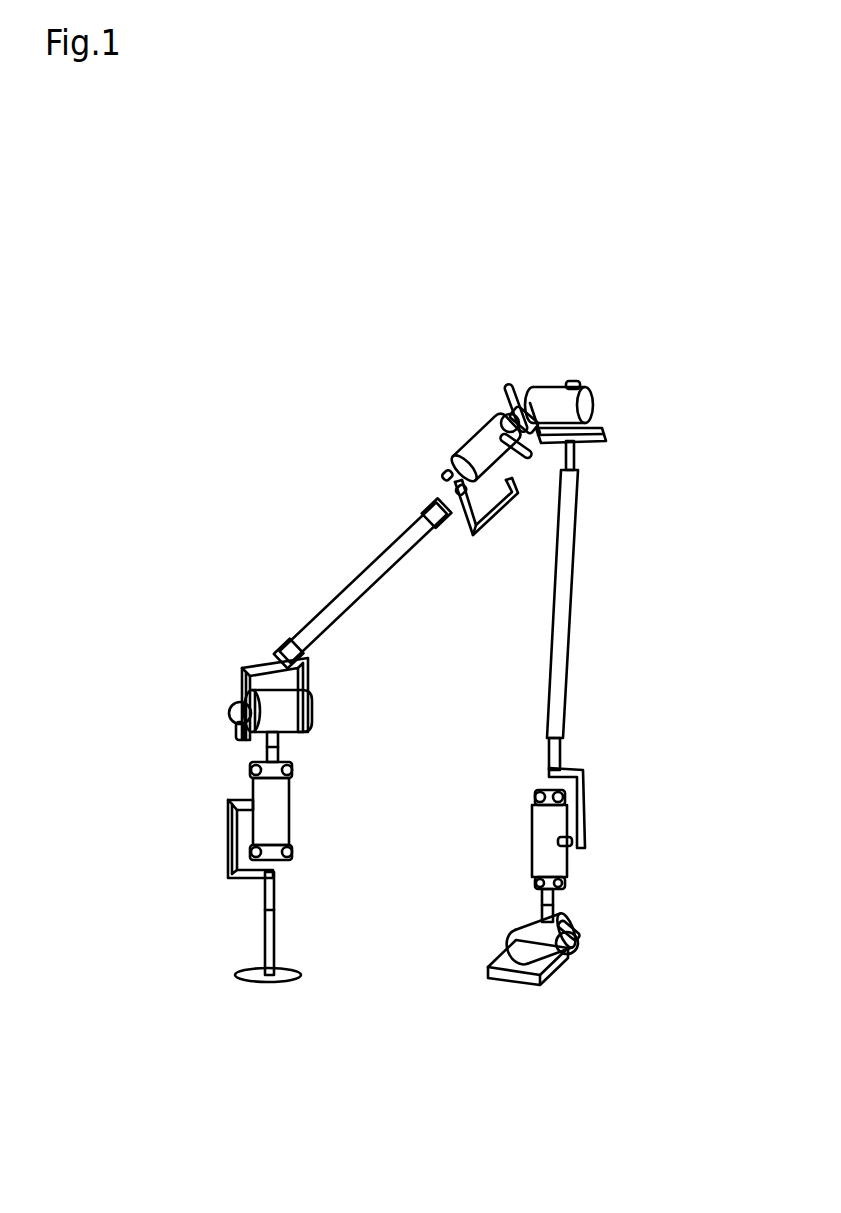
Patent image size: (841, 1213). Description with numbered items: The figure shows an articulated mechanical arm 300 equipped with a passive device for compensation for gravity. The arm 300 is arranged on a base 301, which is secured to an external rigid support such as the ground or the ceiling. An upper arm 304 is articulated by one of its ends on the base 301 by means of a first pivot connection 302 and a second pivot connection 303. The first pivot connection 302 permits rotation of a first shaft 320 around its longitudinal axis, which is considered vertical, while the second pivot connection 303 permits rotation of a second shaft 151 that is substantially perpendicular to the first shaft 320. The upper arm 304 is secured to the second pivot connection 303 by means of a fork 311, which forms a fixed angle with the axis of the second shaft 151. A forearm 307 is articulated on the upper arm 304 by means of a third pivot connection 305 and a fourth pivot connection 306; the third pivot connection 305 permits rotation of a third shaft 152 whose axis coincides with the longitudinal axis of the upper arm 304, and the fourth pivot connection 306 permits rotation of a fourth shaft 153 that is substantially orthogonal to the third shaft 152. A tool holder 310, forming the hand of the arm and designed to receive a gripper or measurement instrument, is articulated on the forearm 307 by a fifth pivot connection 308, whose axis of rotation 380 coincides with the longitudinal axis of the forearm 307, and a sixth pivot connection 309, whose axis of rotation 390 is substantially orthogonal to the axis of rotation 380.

The articulated mechanical arm 300 is at (168, 278).
The base 301 is at (255, 930).
The first pivot connection 302 is at (270, 808).
The second pivot connection 303 is at (288, 710).
The upper arm 304 is at (362, 582).
The third pivot connection 305 is at (488, 462).
The fourth pivot connection 306 is at (575, 388).
The forearm 307 is at (572, 663).
The fifth pivot connection 308 is at (555, 860).
The sixth pivot connection 309 is at (525, 930).
The tool holder 310 is at (510, 978).
The fork 311 is at (258, 662).
The second shaft 151 is at (237, 718).
The third shaft 152 is at (500, 420).
The fourth shaft 153 is at (523, 388).
The first shaft 320 is at (278, 750).
The axis of rotation of the fifth pivot connection 380 is at (543, 900).
The axis of rotation of the sixth pivot connection 390 is at (575, 942).